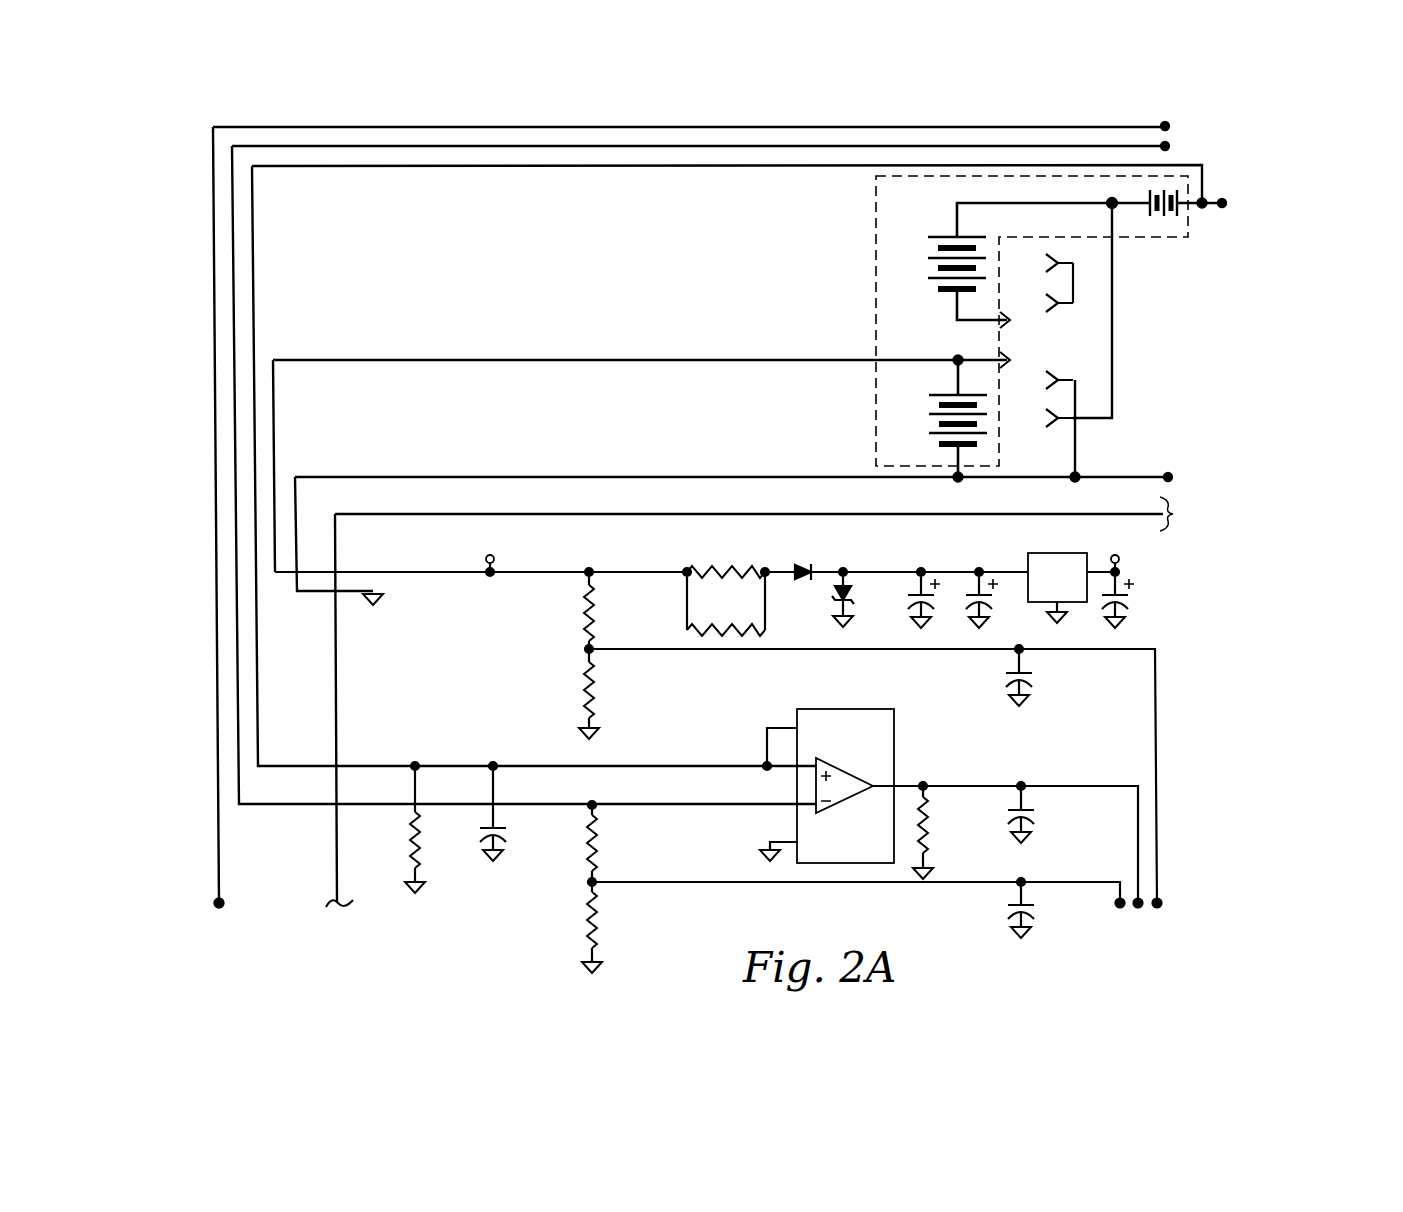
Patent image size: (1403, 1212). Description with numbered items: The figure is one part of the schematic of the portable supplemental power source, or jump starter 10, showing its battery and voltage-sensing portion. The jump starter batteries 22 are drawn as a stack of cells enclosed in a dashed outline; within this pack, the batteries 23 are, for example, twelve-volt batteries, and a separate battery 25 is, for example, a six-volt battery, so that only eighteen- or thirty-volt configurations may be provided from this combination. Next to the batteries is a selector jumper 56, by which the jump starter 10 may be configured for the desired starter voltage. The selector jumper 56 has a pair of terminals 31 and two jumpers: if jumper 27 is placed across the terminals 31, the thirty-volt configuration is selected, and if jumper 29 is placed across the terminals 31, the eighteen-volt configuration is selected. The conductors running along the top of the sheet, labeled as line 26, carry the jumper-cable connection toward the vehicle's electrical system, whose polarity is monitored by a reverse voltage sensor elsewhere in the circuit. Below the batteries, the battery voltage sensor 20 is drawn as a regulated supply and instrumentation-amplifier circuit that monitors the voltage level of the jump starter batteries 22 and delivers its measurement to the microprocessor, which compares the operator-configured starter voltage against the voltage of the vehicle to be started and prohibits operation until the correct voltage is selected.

The portable supplemental power source (jump starter) 10 is at (1274, 156).
The battery voltage sensor 20 is at (766, 500).
The jump starter batteries 22 is at (877, 262).
The batteries 23 is at (933, 395).
The battery 25 is at (1173, 216).
The line 26 is at (672, 166).
The jumper 27 is at (1073, 283).
The jumper 29 is at (1075, 400).
The terminals 31 is at (1040, 339).
The selector jumper 56 is at (1157, 321).